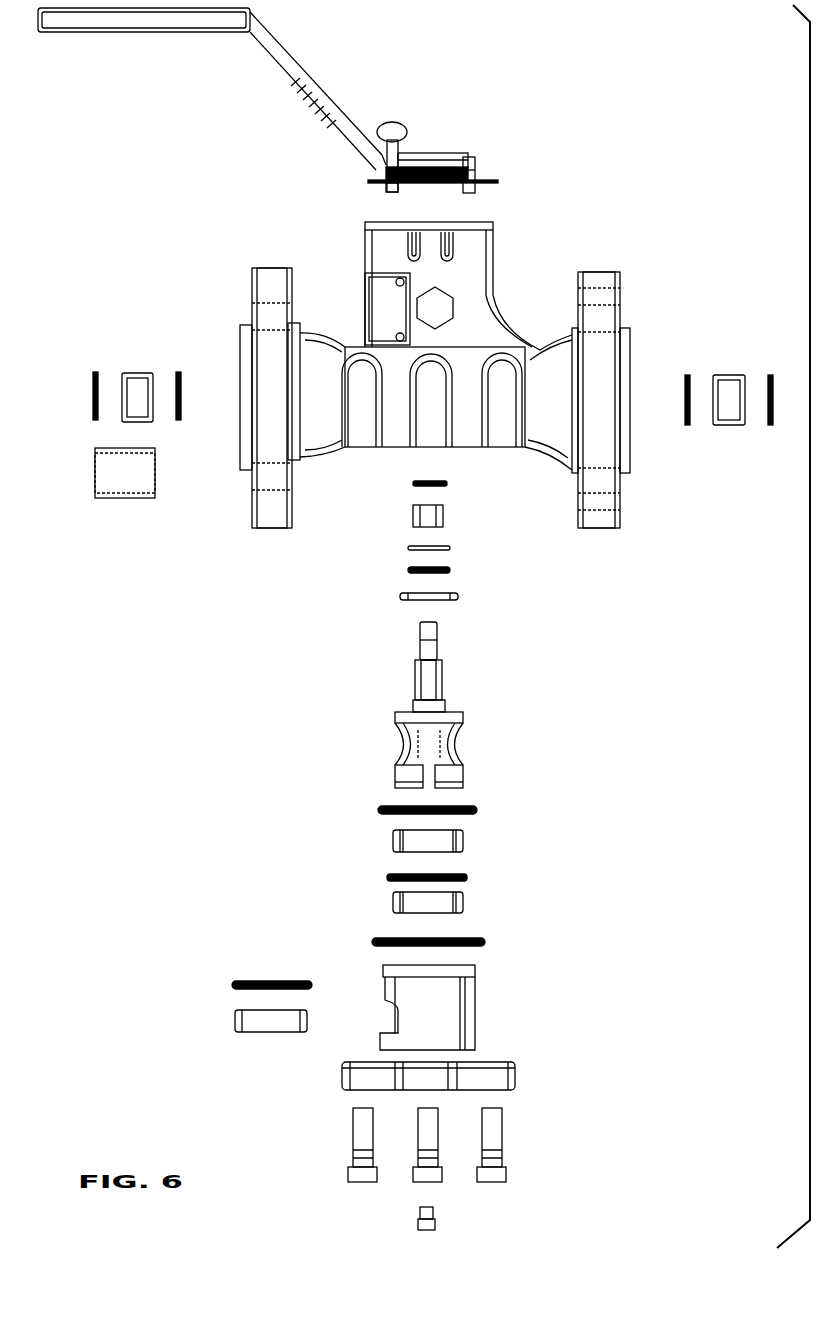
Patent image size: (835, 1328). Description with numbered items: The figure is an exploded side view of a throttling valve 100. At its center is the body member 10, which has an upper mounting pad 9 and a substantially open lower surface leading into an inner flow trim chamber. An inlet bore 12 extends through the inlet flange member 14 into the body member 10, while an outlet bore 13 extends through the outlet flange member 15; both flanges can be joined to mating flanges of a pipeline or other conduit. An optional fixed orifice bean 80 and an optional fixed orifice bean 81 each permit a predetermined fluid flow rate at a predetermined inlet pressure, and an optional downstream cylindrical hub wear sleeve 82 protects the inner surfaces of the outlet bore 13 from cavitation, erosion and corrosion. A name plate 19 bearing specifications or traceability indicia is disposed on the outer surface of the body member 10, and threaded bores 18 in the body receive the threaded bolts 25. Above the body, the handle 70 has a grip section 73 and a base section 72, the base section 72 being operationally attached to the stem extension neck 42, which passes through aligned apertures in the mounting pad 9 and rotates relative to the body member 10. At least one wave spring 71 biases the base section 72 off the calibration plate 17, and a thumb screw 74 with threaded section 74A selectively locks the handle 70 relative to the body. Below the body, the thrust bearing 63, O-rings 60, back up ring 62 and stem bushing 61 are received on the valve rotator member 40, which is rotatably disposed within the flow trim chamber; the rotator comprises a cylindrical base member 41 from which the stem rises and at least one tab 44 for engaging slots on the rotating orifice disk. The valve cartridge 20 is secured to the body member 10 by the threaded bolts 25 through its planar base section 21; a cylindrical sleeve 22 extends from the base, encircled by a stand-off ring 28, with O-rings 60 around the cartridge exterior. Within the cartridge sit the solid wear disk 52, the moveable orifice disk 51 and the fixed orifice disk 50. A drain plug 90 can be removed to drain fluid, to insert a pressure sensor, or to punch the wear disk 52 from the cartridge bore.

The throttling valve 100 is at (172, 240).
The grip section 73 is at (100, 33).
The handle 70 is at (325, 80).
The thumb screw 74 is at (392, 124).
The base section 72 is at (462, 152).
The wave spring 71 is at (470, 167).
The calibration plate 17 is at (368, 182).
The threaded section 74A is at (395, 190).
The upper mounting pad 9 is at (365, 225).
The body member 10 is at (490, 305).
The name plate 19 is at (365, 280).
The threaded bores 18 is at (362, 365).
The outlet bore 13 is at (250, 425).
The outlet flange member 15 is at (268, 530).
The inlet flange member 14 is at (598, 530).
The inlet bore 12 is at (632, 428).
The O-rings 60 is at (95, 372).
The fixed orifice bean 80 is at (137, 373).
The fixed orifice bean 81 is at (728, 375).
The downstream cylindrical hub wear sleeve 82 is at (95, 490).
The stem bushing 61 is at (413, 520).
The back up ring 62 is at (450, 548).
The thrust bearing 63 is at (458, 597).
The valve rotator member 40 is at (408, 694).
The stem extension neck 42 is at (437, 632).
The base member 41 is at (463, 740).
The tab 44 is at (465, 782).
The moveable orifice disk 51 is at (463, 840).
The fixed orifice disk 50 is at (463, 900).
The solid wear disk 52 is at (235, 1025).
The cylindrical sleeve 22 is at (475, 1020).
The stand-off ring 28 is at (493, 1060).
The base section 21 is at (515, 1080).
The valve cartridge 20 is at (433, 1091).
The threaded bolts 25 is at (502, 1140).
The drain plug 90 is at (418, 1222).